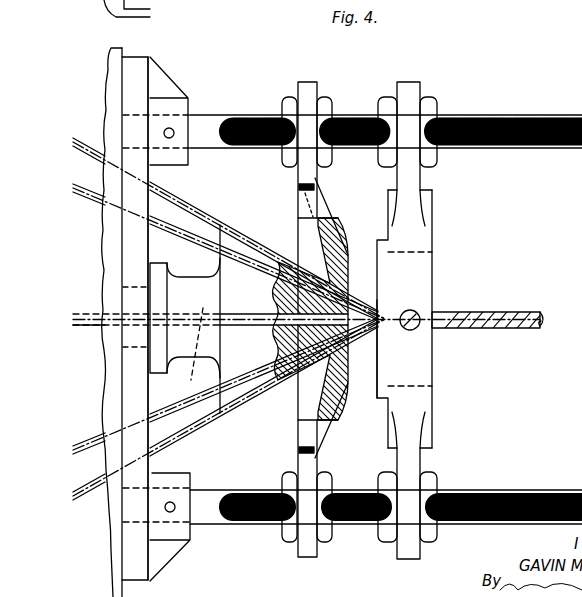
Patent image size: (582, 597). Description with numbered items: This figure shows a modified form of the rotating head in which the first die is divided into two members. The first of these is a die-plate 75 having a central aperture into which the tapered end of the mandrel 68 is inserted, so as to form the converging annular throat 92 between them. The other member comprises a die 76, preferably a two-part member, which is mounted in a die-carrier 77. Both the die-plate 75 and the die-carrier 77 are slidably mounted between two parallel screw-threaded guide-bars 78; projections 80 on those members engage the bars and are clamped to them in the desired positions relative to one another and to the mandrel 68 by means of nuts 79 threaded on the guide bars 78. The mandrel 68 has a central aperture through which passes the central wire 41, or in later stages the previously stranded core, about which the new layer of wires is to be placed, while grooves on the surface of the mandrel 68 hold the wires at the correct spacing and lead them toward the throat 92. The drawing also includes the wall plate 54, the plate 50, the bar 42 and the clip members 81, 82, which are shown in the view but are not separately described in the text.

The central wire 41 is at (95, 317).
The bar 42 is at (497, 318).
The plate 50 is at (135, 100).
The wall plate 54 is at (112, 98).
The mandrel 68 is at (243, 352).
The die-plate 75 is at (300, 404).
The die 76 is at (382, 288).
The die-carrier 77 is at (413, 397).
The screw-threaded guide-bars 78 is at (537, 124).
The nuts 79 is at (290, 103).
The projections 80 is at (410, 88).
The lower clip 81 is at (167, 365).
The upper clip 82 is at (190, 263).
The converging annular throat 92 is at (300, 240).